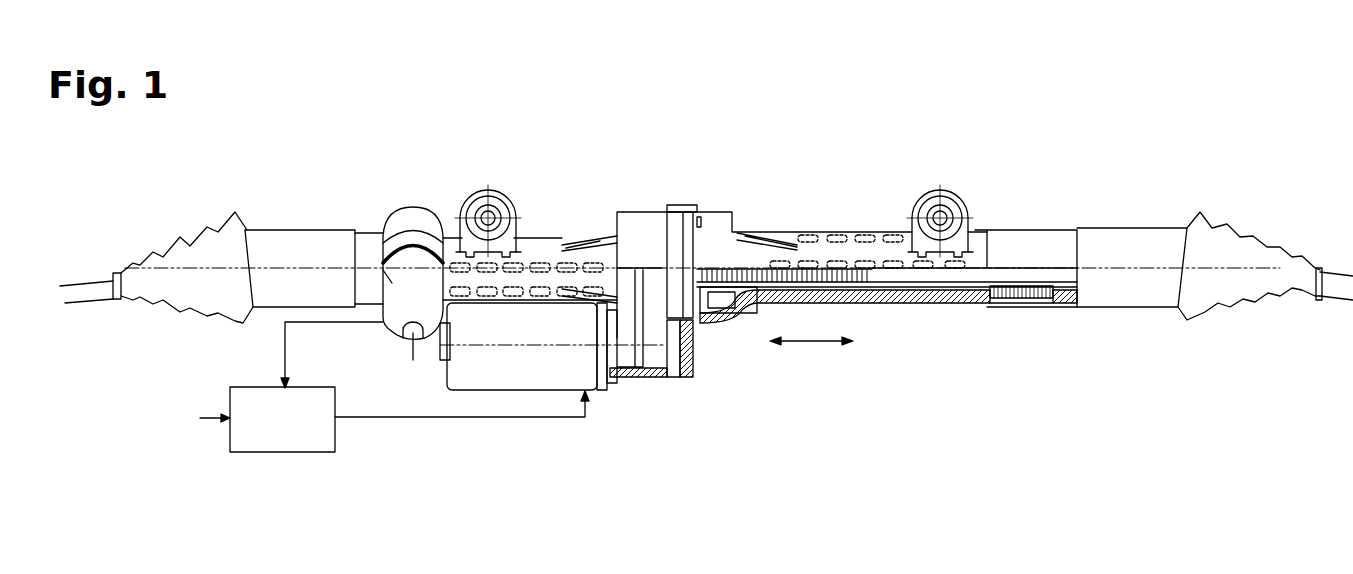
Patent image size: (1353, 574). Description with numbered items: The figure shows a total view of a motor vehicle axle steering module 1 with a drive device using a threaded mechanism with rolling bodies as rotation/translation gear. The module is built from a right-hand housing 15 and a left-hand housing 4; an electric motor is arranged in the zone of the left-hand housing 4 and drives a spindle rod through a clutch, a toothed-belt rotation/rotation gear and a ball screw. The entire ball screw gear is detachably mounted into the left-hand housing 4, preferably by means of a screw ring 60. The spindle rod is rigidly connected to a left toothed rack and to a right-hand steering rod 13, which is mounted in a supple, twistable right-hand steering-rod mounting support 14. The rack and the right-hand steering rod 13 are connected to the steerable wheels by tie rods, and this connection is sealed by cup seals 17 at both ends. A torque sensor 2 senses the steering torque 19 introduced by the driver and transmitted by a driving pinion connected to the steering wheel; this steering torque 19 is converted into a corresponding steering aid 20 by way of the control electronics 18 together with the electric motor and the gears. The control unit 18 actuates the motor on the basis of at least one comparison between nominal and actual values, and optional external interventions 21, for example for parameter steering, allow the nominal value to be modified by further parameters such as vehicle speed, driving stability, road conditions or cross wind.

The motor vehicle axle steering module 1 is at (713, 233).
The torque sensor 2 is at (388, 283).
The left-hand housing 4 is at (633, 233).
The right-hand steering rod 13 is at (937, 277).
The right-hand steering-rod mounting support 14 is at (1028, 300).
The right-hand housing 15 is at (1027, 240).
The cup seals 17 is at (152, 256).
The control electronics (control unit) 18 is at (235, 440).
The steering torque 19 is at (410, 353).
The steering aid 20 is at (812, 346).
The external interventions 21 is at (216, 416).
The screw ring 60 is at (700, 327).